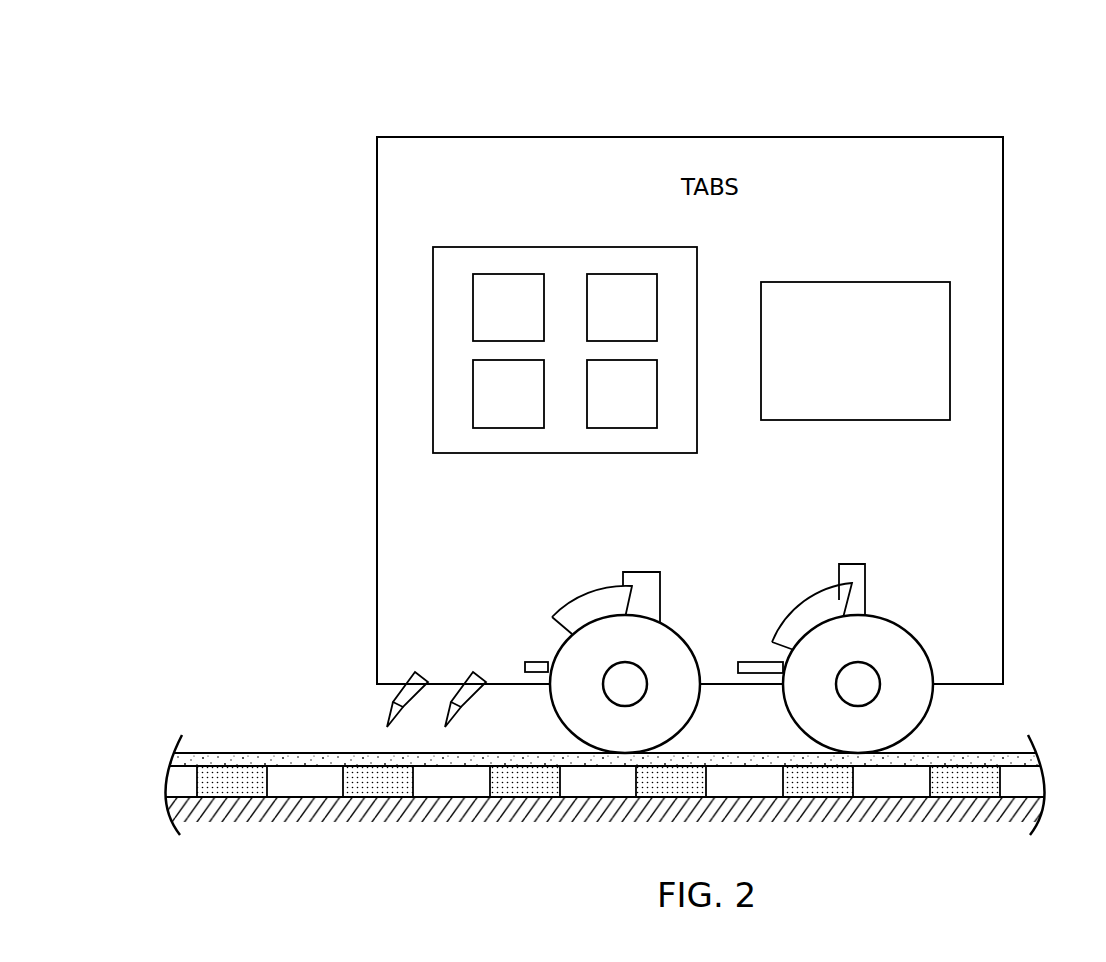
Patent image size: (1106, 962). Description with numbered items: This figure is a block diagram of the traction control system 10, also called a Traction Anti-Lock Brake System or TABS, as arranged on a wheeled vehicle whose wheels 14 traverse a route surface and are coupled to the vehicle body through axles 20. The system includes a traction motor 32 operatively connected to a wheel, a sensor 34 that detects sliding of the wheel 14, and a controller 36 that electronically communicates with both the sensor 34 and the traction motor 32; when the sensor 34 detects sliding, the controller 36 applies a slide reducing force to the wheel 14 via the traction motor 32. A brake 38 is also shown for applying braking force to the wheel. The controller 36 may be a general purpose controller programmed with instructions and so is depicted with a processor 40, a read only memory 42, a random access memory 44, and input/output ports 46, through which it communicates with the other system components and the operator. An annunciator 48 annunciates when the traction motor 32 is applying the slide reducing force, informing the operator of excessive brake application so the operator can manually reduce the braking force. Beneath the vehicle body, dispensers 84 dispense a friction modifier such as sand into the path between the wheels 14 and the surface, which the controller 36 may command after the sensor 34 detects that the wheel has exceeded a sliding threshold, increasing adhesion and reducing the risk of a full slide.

The traction control system 10 is at (977, 90).
The wheel 14 is at (690, 719).
The axle 20 is at (641, 679).
The traction motor 32 is at (640, 571).
The sensor 34 is at (533, 661).
The controller 36 is at (565, 246).
The brake 38 is at (593, 589).
The processor 40 is at (496, 323).
The read only memory 42 is at (607, 323).
The random access memory 44 is at (496, 407).
The input/output port 46 is at (607, 407).
The annunciator 48 is at (855, 281).
The dispenser 84 is at (419, 680).